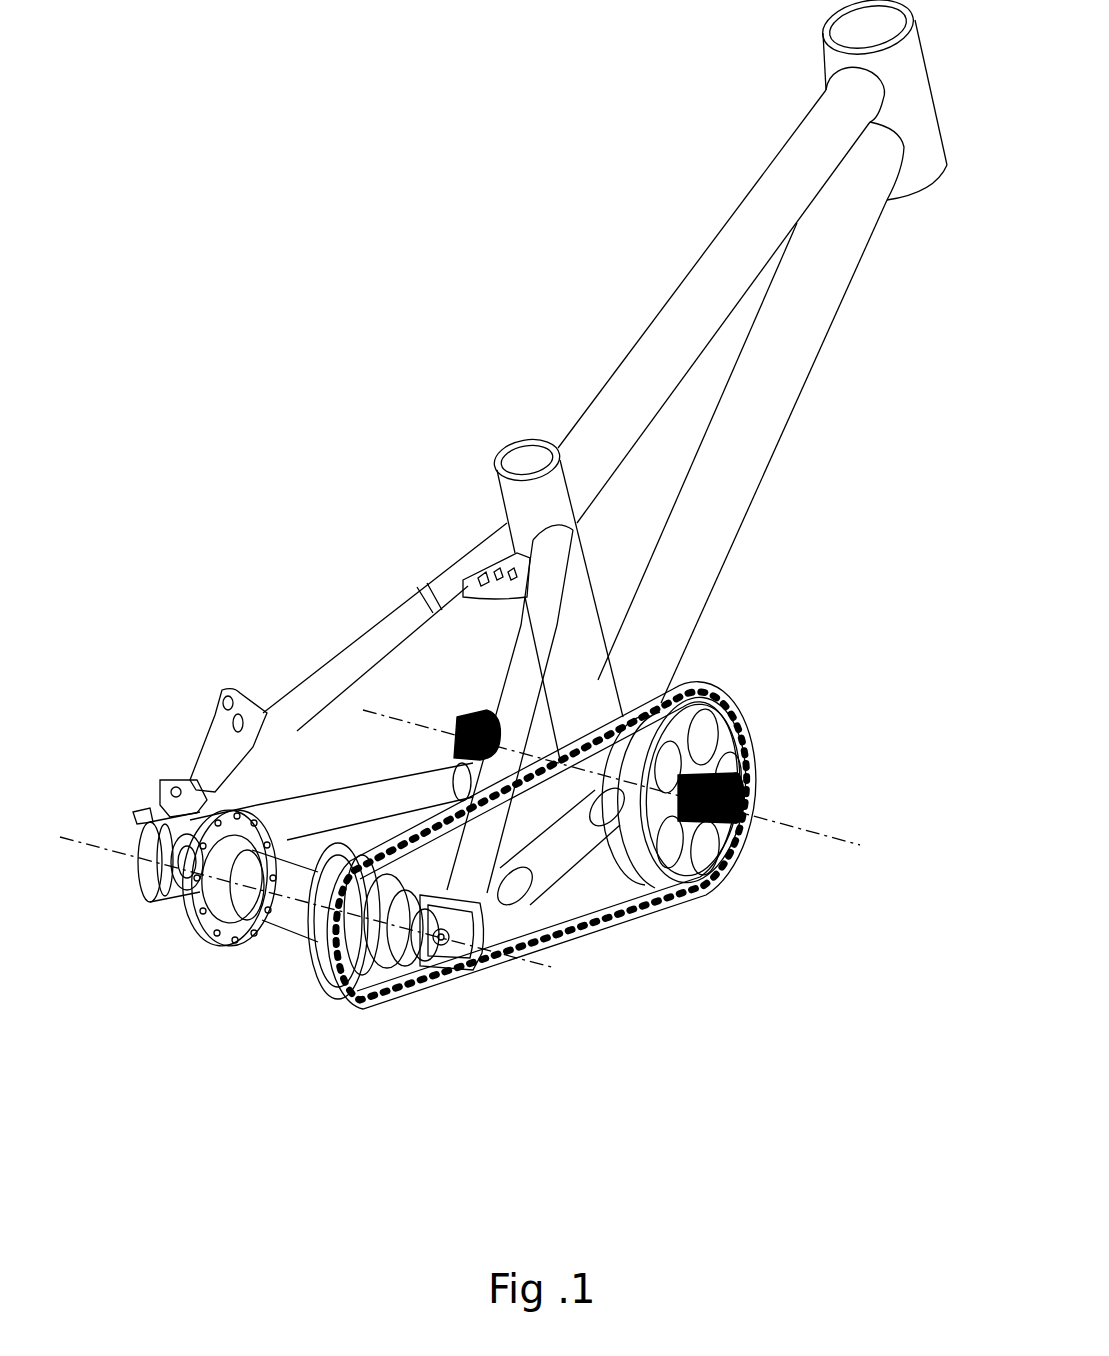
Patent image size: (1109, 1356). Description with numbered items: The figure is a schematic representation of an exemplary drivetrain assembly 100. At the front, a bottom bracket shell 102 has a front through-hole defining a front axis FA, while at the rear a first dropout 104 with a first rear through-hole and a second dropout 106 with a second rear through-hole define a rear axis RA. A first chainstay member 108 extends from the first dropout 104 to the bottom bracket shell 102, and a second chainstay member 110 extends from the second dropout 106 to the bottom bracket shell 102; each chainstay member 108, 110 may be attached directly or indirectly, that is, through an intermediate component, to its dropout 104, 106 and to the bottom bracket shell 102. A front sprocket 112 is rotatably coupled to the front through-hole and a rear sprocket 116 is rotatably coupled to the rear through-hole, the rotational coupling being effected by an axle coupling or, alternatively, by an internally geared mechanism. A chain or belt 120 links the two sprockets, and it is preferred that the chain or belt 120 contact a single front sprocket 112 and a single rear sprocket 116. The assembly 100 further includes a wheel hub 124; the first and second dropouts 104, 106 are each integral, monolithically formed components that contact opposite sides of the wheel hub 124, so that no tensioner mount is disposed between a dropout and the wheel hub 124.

The drivetrain assembly 100 is at (218, 108).
The bottom bracket shell 102 is at (545, 748).
The first dropout 104 is at (148, 893).
The second dropout 106 is at (460, 978).
The first chainstay member 108 is at (390, 772).
The second chainstay member 110 is at (545, 875).
The front sprocket 112 is at (643, 875).
The rear sprocket 116 is at (351, 985).
The chain or belt 120 is at (627, 922).
The wheel hub 124 is at (278, 925).
The rear axis RA is at (305, 889).
The front axis FA is at (611, 777).